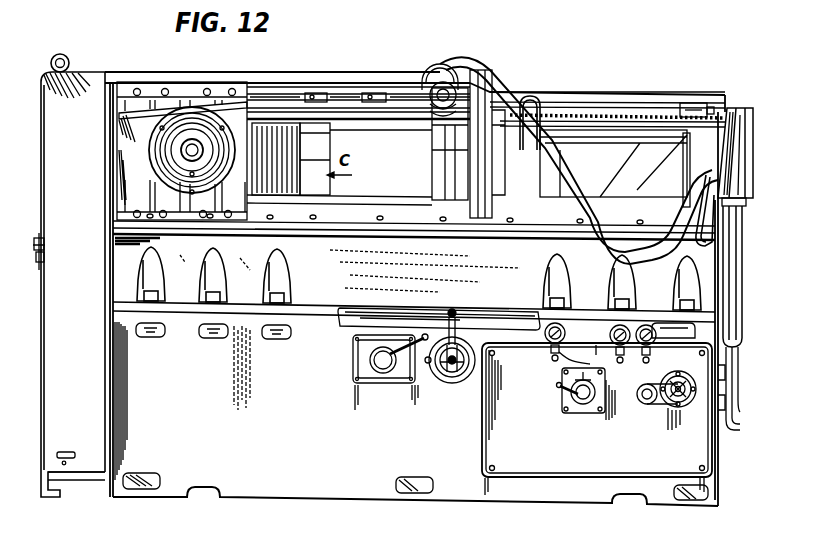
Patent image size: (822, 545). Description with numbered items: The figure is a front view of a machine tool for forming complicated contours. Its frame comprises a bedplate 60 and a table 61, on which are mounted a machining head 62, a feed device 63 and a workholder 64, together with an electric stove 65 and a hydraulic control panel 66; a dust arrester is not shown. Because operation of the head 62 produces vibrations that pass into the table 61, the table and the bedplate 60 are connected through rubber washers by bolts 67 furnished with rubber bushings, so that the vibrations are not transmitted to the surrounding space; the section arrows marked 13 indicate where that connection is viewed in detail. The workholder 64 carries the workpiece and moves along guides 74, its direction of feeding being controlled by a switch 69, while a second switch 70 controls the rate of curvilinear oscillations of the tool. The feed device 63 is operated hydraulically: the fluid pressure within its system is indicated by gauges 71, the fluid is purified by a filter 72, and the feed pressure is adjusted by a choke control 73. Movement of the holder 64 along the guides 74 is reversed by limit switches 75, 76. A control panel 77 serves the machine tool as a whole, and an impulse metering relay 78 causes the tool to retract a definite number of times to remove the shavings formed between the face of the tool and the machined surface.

The section line for FIG. 13 is at (277, 239).
The bedplate 60 is at (128, 400).
The table 61 is at (126, 258).
The machining head 62 is at (122, 140).
The feed device 63 is at (588, 160).
The workholder 64 is at (490, 88).
The electric stove 65 is at (60, 437).
The hydraulic control panel 66 is at (518, 458).
The bolts 67 is at (292, 292).
The switch 69 is at (444, 392).
The switch 70 is at (364, 388).
The gauges 71 is at (647, 350).
The filter 72 is at (670, 418).
The choke control 73 is at (578, 414).
The guides 74 is at (660, 116).
The limit switch 75 is at (372, 93).
The limit switch 76 is at (692, 104).
The control panel 77 is at (742, 110).
The impulse metering relay 78 is at (35, 238).